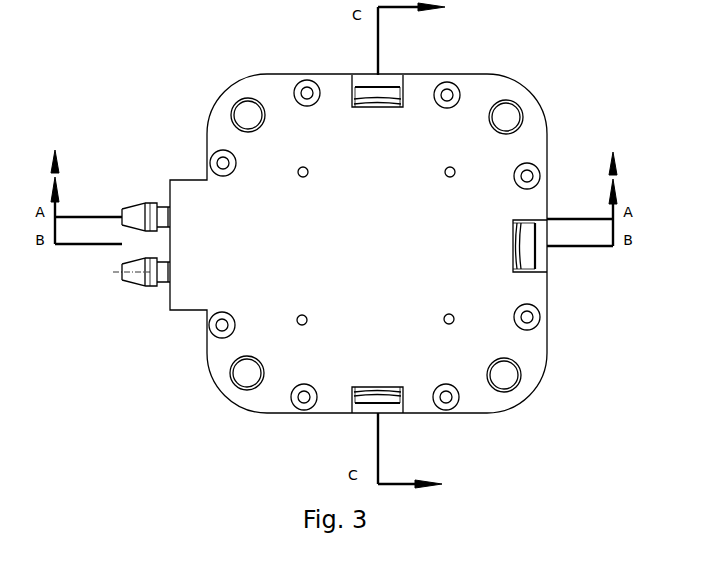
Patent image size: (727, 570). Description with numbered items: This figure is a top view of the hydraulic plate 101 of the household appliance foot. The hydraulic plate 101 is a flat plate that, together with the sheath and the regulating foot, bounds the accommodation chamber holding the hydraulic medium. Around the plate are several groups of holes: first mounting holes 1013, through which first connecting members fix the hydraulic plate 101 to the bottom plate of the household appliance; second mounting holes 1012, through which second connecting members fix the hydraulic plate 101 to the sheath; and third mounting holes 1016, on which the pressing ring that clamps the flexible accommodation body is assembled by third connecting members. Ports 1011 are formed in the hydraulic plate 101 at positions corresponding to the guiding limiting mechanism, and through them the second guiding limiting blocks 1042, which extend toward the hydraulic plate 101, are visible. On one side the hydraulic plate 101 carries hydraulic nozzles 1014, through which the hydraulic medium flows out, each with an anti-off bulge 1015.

The hydraulic plate 101 is at (497, 343).
The port 1011 is at (403, 95).
The second mounting hole 1012 is at (247, 117).
The first mounting hole 1013 is at (537, 316).
The hydraulic nozzle 1014 is at (143, 263).
The anti-off bulge 1015 is at (155, 283).
The third mounting hole 1016 is at (452, 327).
The second guiding limiting block 1042 is at (377, 90).